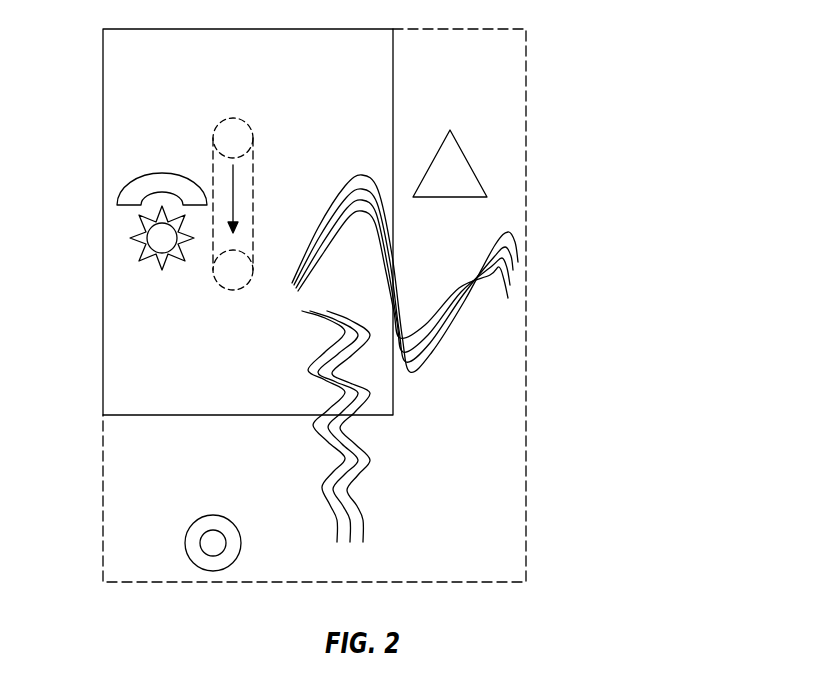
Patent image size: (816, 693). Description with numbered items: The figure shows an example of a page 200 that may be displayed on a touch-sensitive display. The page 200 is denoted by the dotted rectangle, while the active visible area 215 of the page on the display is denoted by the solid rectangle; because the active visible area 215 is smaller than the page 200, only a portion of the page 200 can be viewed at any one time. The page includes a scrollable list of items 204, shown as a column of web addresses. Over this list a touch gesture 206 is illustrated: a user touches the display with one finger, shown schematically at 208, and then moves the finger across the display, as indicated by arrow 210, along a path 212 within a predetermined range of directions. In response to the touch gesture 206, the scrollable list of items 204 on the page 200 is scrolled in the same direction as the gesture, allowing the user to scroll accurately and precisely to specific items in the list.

The page 200 is at (505, 90).
The active visible area 215 is at (127, 60).
The scrollable list of items 204 is at (108, 335).
The touch gesture 206 is at (226, 172).
The finger 208 is at (232, 138).
The arrow 210 is at (236, 188).
The path 212 is at (241, 211).